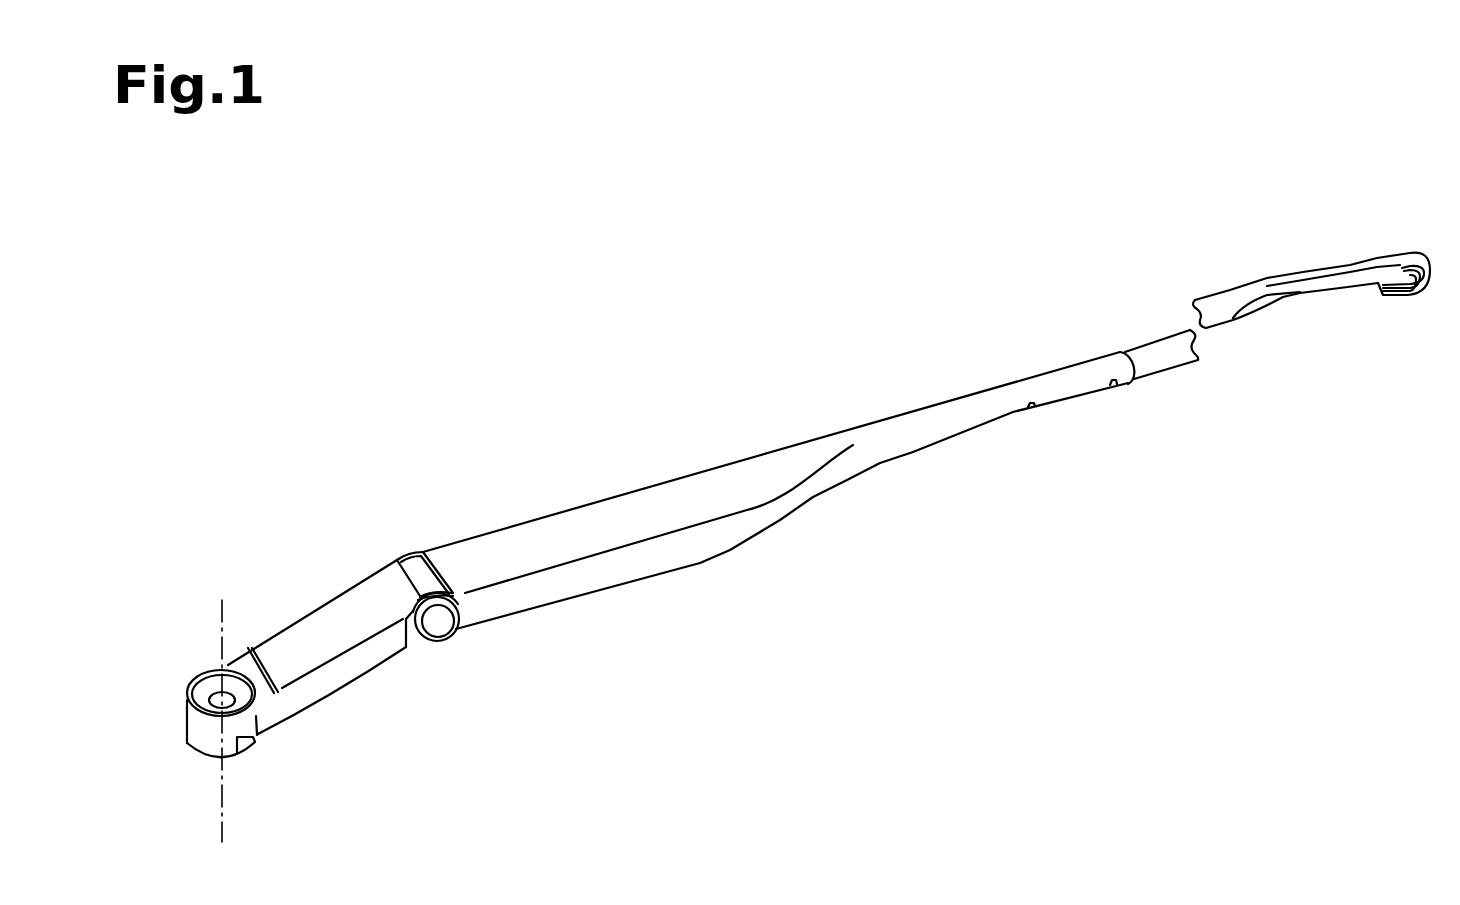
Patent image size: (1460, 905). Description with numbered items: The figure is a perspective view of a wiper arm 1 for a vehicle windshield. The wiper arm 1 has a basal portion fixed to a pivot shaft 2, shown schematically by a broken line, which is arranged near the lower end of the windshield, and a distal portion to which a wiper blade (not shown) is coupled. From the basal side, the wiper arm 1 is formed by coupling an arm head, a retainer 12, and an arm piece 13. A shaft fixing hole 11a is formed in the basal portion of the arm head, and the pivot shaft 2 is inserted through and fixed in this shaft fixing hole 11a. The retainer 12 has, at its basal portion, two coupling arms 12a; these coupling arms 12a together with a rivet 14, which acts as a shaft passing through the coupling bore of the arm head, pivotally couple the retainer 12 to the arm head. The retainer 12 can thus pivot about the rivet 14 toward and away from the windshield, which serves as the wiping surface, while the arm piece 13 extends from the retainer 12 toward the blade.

The wiper arm 1 is at (350, 588).
The pivot shaft 2 is at (220, 600).
The shaft fixing hole 11a is at (220, 701).
The retainer 12 is at (638, 489).
The coupling arms 12a is at (437, 636).
The arm piece 13 is at (1157, 344).
The rivet 14 is at (445, 622).